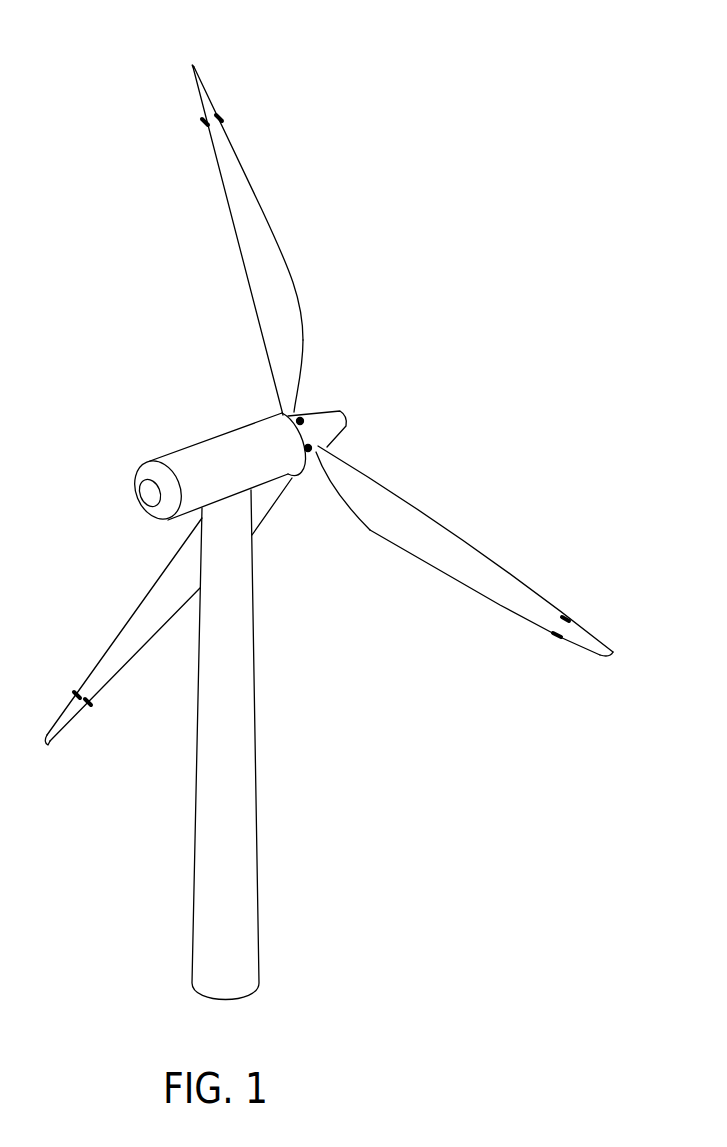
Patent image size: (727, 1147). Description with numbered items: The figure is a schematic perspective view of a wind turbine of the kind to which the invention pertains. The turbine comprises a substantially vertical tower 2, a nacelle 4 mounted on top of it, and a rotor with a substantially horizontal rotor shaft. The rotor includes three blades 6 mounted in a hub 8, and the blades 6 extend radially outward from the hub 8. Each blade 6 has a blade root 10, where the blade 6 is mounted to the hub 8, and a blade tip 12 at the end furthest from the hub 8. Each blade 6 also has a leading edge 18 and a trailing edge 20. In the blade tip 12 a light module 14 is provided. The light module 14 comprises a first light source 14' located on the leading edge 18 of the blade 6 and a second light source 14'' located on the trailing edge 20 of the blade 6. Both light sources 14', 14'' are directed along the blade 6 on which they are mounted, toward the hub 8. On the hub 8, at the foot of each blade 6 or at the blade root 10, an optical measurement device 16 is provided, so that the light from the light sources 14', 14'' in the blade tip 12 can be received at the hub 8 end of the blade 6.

The tower 2 is at (236, 811).
The nacelle 4 is at (218, 453).
The blade 6 is at (334, 402).
The hub 8 is at (323, 427).
The blade root 10 is at (287, 387).
The blade tip 12 is at (200, 80).
The light module 14 is at (349, 431).
The first light source 14' is at (349, 408).
The second light source 14'' is at (323, 395).
The optical measurement device 16 is at (302, 415).
The leading edge 18 is at (252, 183).
The trailing edge 20 is at (228, 228).